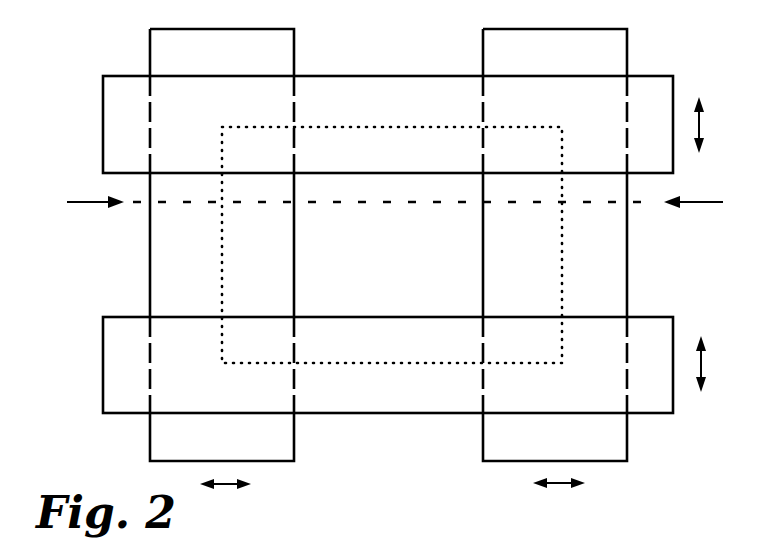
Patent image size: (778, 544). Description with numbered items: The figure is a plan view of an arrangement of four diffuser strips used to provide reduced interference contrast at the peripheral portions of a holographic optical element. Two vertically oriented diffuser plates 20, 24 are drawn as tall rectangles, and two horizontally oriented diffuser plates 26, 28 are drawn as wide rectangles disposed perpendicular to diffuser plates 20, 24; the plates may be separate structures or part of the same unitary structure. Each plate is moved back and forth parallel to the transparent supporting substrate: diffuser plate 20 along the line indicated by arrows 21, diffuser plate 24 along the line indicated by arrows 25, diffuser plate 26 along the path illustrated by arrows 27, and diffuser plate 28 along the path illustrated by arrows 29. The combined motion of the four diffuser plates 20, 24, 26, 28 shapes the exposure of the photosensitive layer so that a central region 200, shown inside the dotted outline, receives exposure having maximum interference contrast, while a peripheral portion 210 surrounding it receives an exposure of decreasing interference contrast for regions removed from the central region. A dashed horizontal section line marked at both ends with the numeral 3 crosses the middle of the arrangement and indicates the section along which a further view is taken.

The section line 3- 3 is at (73, 193).
The diffuser plate 20 is at (608, 251).
The arrows 21 is at (559, 483).
The diffuser plate 24 is at (166, 253).
The arrows 25 is at (227, 484).
The diffuser plate 26 is at (113, 118).
The arrows 27 is at (699, 125).
The diffuser plate 28 is at (111, 360).
The arrows 29 is at (701, 364).
The central region 200 is at (434, 246).
The peripheral portion 210 is at (432, 345).